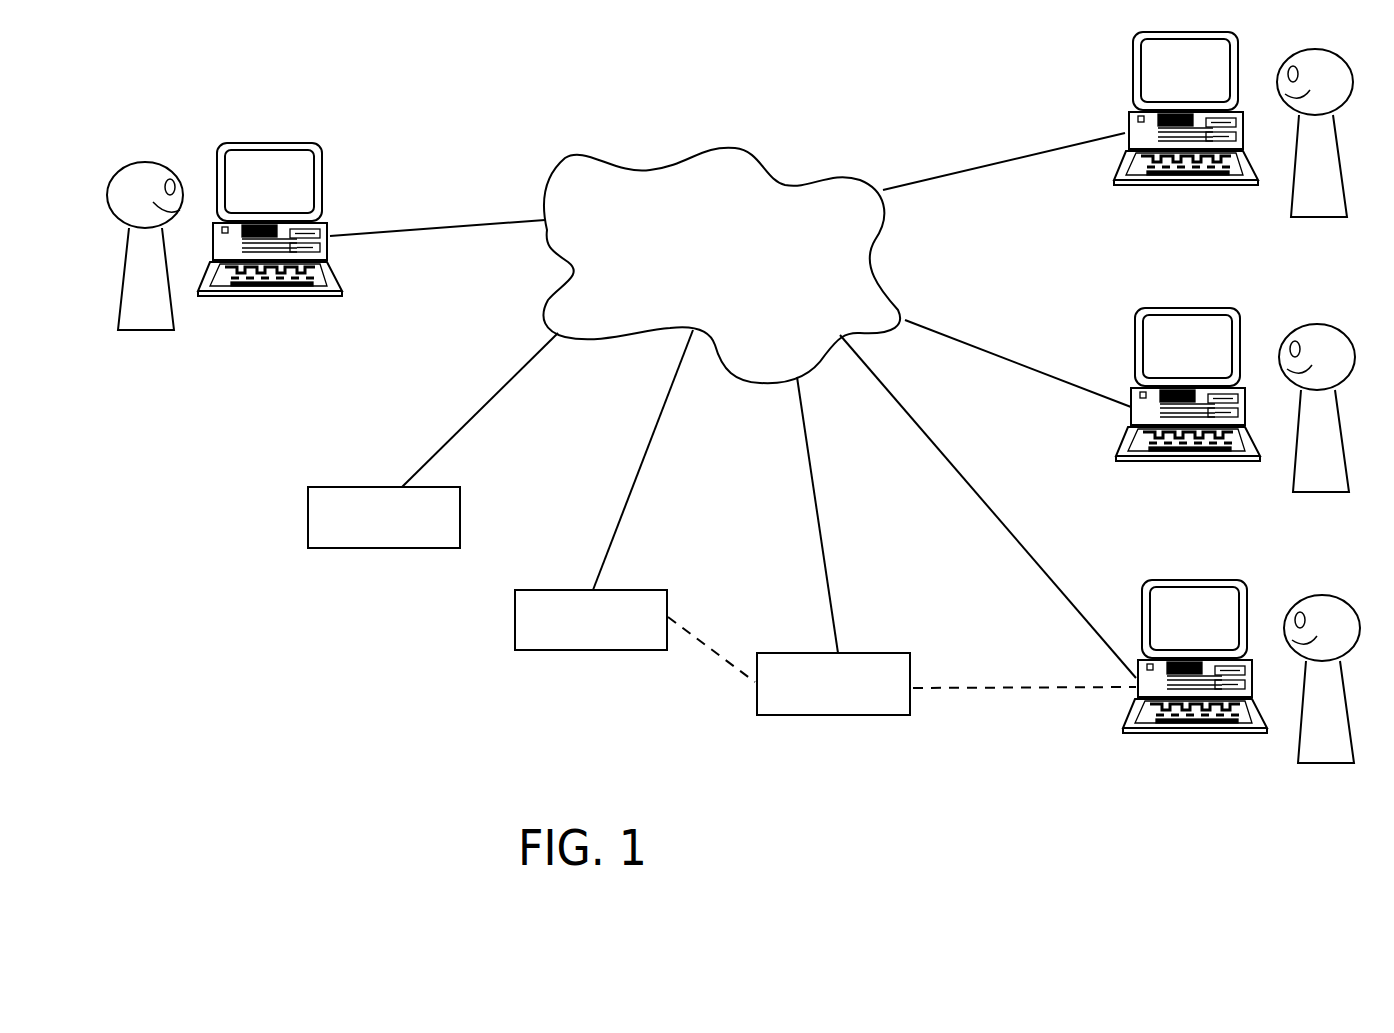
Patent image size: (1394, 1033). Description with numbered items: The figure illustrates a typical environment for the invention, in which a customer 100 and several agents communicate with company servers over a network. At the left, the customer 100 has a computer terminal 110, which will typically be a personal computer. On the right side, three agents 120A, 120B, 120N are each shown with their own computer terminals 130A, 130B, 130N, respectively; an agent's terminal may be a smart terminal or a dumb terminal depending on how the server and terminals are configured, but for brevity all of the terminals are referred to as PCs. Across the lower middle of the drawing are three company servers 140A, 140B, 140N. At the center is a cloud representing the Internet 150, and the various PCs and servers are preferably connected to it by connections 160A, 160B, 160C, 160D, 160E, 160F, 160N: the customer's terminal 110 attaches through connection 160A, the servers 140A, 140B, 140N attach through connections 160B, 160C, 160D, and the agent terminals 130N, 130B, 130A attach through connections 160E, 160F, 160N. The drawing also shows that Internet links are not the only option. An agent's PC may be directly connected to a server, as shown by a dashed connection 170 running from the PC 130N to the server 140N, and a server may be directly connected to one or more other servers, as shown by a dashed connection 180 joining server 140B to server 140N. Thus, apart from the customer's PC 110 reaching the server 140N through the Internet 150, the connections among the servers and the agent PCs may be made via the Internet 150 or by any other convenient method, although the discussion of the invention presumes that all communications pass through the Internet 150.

The customer 100 is at (142, 335).
The computer terminal 110 is at (267, 302).
The agent 120A is at (1313, 225).
The agent 120B is at (1322, 498).
The agent 120N is at (1327, 768).
The computer terminal 130A is at (1182, 190).
The computer terminal 130B is at (1183, 463).
The computer terminal 130N is at (1185, 735).
The company server 140A is at (398, 553).
The company server 140B is at (607, 657).
The company server 140N is at (850, 718).
The Internet 150 is at (763, 150).
The connection 160A is at (462, 218).
The connection 160B is at (478, 400).
The connection 160C is at (633, 475).
The connection 160D is at (820, 553).
The connection 160E is at (1013, 538).
The connection 160F is at (1052, 370).
The connection 160N is at (1017, 152).
The connection 170 is at (1065, 697).
The connection 180 is at (720, 663).